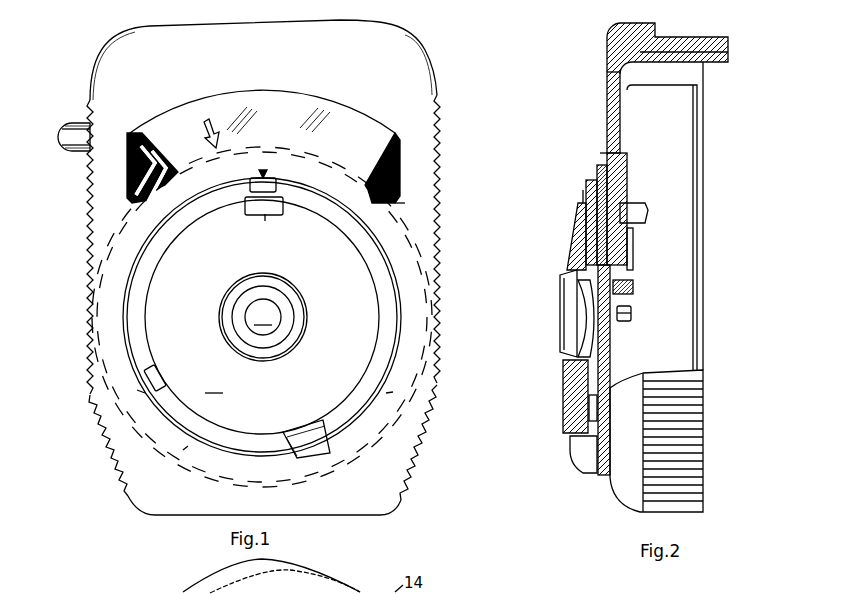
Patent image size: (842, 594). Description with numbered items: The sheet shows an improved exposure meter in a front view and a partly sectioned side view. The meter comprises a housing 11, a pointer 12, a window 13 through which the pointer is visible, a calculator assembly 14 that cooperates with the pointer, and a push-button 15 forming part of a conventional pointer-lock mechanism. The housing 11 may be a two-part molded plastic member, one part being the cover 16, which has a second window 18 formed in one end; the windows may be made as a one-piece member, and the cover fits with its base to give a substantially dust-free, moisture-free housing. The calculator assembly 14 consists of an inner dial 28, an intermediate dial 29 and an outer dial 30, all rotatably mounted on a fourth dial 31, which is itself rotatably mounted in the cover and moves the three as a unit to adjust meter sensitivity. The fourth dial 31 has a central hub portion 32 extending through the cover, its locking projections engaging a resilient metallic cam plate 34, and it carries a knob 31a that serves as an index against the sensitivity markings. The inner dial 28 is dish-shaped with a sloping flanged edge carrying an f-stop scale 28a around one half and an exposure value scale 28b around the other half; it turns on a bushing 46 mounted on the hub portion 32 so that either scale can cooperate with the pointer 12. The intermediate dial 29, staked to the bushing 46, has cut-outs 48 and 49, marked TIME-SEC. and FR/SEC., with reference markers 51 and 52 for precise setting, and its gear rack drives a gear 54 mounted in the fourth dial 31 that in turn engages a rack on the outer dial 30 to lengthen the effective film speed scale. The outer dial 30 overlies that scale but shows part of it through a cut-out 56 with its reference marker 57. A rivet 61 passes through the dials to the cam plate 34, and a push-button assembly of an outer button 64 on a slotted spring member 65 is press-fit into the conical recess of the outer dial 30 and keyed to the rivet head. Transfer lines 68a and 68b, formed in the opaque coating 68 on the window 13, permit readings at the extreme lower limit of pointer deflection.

In FIG. 1, the housing 11 is at (418, 460).
In FIG. 1, the pointer 12 is at (209, 128).
In FIG. 1, the window 13 is at (372, 124).
In FIG. 1, the calculator assembly 14 is at (355, 328).
In FIG. 1, the push-button 15 is at (74, 123).
In FIG. 2, the cover 16 is at (700, 477).
In FIG. 2, the second window 18 is at (713, 44).
In FIG. 1, the inner dial 28 is at (112, 322).
In FIG. 2, the inner dial 28 is at (604, 152).
In FIG. 1, the f-stop scale 28a is at (405, 205).
In FIG. 1, the exposure value scale 28b is at (190, 450).
In FIG. 2, the intermediate dial 29 is at (596, 178).
In FIG. 1, the outer dial 30 is at (179, 360).
In FIG. 2, the outer dial 30 is at (570, 240).
In FIG. 1, the fourth dial 31 is at (387, 393).
In FIG. 2, the fourth dial 31 is at (590, 192).
In FIG. 1, the knob 31a is at (326, 444).
In FIG. 2, the knob 31a is at (588, 467).
In FIG. 2, the hub portion 32 is at (633, 283).
In FIG. 2, the cam plate 34 is at (633, 256).
In FIG. 2, the bushing 46 is at (586, 372).
In FIG. 1, the cut-out 48 is at (285, 177).
In FIG. 1, the cut-out 49 is at (160, 375).
In FIG. 1, the reference marker 51 is at (263, 176).
In FIG. 1, the reference marker 52 is at (137, 390).
In FIG. 2, the gear 54 is at (588, 410).
In FIG. 1, the cut-out 56 is at (243, 221).
In FIG. 1, the reference marker 57 is at (265, 222).
In FIG. 2, the rivet 61 is at (632, 319).
In FIG. 1, the outer button 64 is at (263, 317).
In FIG. 2, the outer button 64 is at (566, 292).
In FIG. 2, the slotted spring member 65 is at (580, 334).
In FIG. 1, the opaque coating 68 is at (127, 180).
In FIG. 1, the transfer line 68a is at (150, 150).
In FIG. 1, the transfer line 68b is at (161, 158).